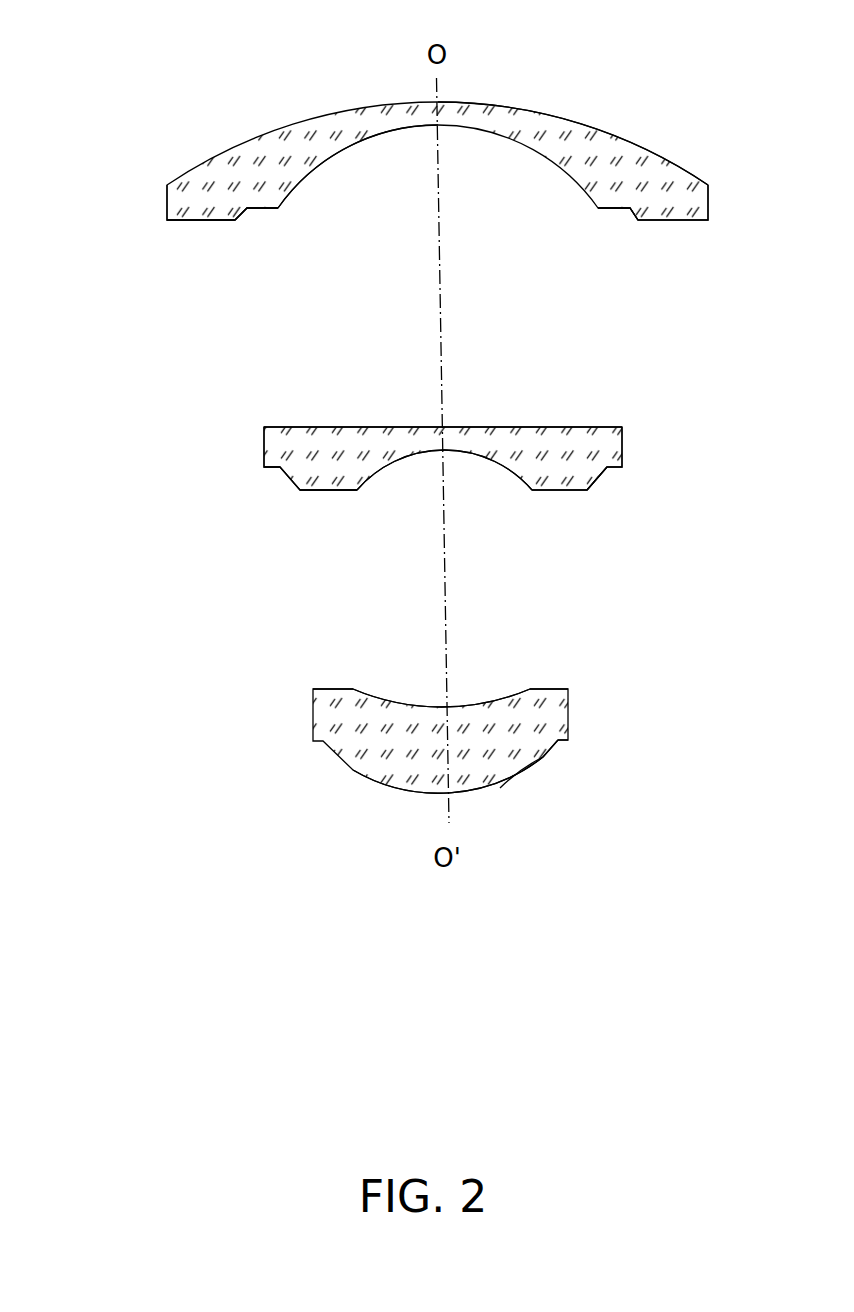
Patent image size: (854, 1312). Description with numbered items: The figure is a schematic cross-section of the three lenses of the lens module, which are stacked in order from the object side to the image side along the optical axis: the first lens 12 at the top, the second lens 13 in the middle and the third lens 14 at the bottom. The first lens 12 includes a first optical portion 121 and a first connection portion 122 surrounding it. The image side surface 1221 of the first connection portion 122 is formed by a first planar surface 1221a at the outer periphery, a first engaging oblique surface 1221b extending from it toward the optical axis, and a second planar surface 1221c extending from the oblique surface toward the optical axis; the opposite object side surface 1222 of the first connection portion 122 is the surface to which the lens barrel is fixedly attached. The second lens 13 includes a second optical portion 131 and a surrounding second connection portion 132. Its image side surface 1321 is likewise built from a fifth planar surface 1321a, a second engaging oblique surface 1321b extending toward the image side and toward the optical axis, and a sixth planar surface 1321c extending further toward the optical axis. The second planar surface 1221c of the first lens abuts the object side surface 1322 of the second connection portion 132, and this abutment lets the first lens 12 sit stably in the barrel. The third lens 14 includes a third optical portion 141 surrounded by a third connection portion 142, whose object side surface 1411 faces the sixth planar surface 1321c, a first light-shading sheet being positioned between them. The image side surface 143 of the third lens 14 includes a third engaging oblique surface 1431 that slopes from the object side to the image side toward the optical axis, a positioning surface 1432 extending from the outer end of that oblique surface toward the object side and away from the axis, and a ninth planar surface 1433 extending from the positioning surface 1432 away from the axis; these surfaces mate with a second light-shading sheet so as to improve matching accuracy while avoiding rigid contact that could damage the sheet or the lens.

The first lens 12 is at (213, 51).
The first optical portion 121 is at (355, 123).
The first connection portion 122 is at (262, 177).
The image side surface of the first connection portion 1221 is at (210, 240).
The first planar surface 1221a is at (192, 222).
The first engaging oblique surface 1221b is at (630, 213).
The second planar surface 1221c is at (260, 212).
The object side surface of the first connection portion 1222 is at (695, 158).
The second lens 13 is at (282, 362).
The second optical portion 131 is at (387, 447).
The second connection portion 132 is at (327, 462).
The image side surface of the second connection portion 1321 is at (313, 510).
The fifth planar surface 1321a is at (273, 470).
The second engaging oblique surface 1321b is at (595, 479).
The sixth planar surface 1321c is at (333, 492).
The object side surface of the second connection portion 1322 is at (615, 403).
The third lens 14 is at (473, 605).
The third optical portion 141 is at (508, 710).
The third connection portion 142 is at (560, 703).
The object side surface of the third connection portion 1411 is at (336, 678).
The image side surface of the third lens 143 is at (397, 800).
The third engaging oblique surface 1431 is at (545, 752).
The positioning surface 1432 is at (545, 758).
The ninth planar surface 1433 is at (560, 742).